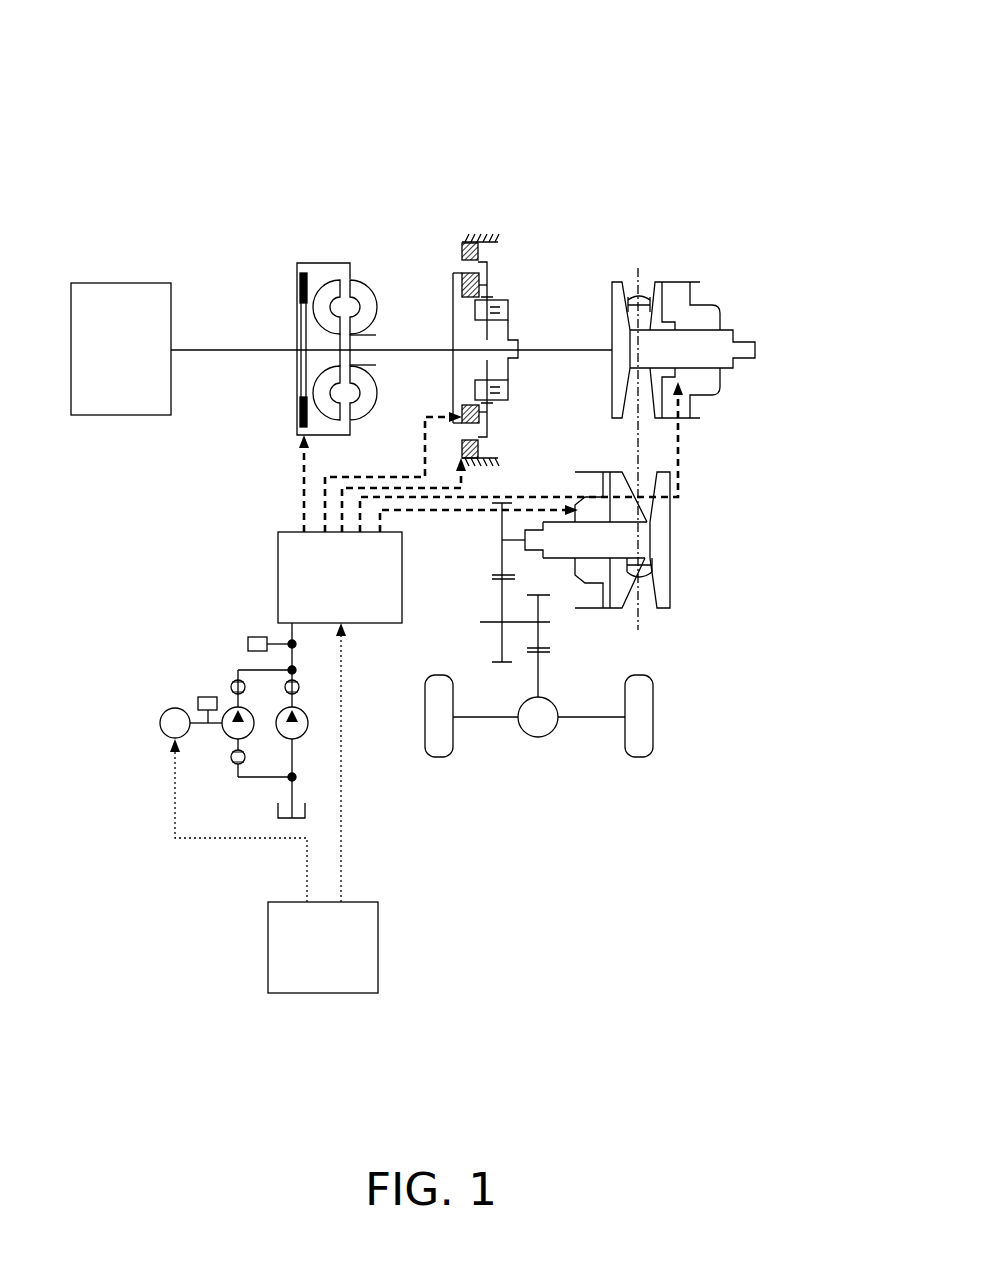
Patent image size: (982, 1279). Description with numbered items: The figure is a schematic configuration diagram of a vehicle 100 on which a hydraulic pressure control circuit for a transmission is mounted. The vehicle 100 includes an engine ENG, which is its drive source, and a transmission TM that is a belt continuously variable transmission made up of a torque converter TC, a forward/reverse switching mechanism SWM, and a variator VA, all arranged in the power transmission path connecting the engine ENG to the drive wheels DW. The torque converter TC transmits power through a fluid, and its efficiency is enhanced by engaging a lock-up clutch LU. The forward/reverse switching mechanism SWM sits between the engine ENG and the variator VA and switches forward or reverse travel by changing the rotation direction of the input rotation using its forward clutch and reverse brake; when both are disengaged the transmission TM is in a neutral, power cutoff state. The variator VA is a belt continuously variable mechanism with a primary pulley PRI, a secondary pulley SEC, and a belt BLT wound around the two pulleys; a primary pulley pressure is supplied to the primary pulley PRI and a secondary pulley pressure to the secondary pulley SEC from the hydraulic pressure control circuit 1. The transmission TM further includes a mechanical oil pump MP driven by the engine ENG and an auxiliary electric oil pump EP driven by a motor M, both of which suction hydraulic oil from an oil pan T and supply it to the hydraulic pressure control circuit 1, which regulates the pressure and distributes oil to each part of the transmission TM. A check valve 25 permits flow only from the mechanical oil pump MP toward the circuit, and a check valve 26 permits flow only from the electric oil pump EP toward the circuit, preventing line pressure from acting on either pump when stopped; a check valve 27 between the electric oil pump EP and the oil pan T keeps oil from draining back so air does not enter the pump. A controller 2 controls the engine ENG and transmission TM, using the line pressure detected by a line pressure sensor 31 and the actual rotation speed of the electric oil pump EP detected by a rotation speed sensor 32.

The vehicle 100 is at (212, 73).
The transmission TM is at (730, 117).
The engine ENG is at (118, 283).
The torque converter TC is at (331, 250).
The lock-up clutch LU is at (297, 420).
The forward/reverse switching mechanism SWM is at (463, 206).
The variator VA is at (668, 242).
The primary pulley PRI is at (722, 312).
The secondary pulley SEC is at (670, 560).
The belt BLT is at (643, 580).
The drive wheels DW is at (425, 717).
The hydraulic pressure control circuit 1 is at (278, 587).
The controller 2 is at (320, 993).
The line pressure sensor 31 is at (250, 638).
The rotation speed sensor 32 is at (208, 697).
The check valve 25 is at (298, 680).
The check valve 26 is at (233, 680).
The check valve 27 is at (236, 766).
The electric oil pump EP is at (229, 736).
The mechanical oil pump MP is at (303, 736).
The motor M is at (175, 708).
The oil pan T is at (278, 811).